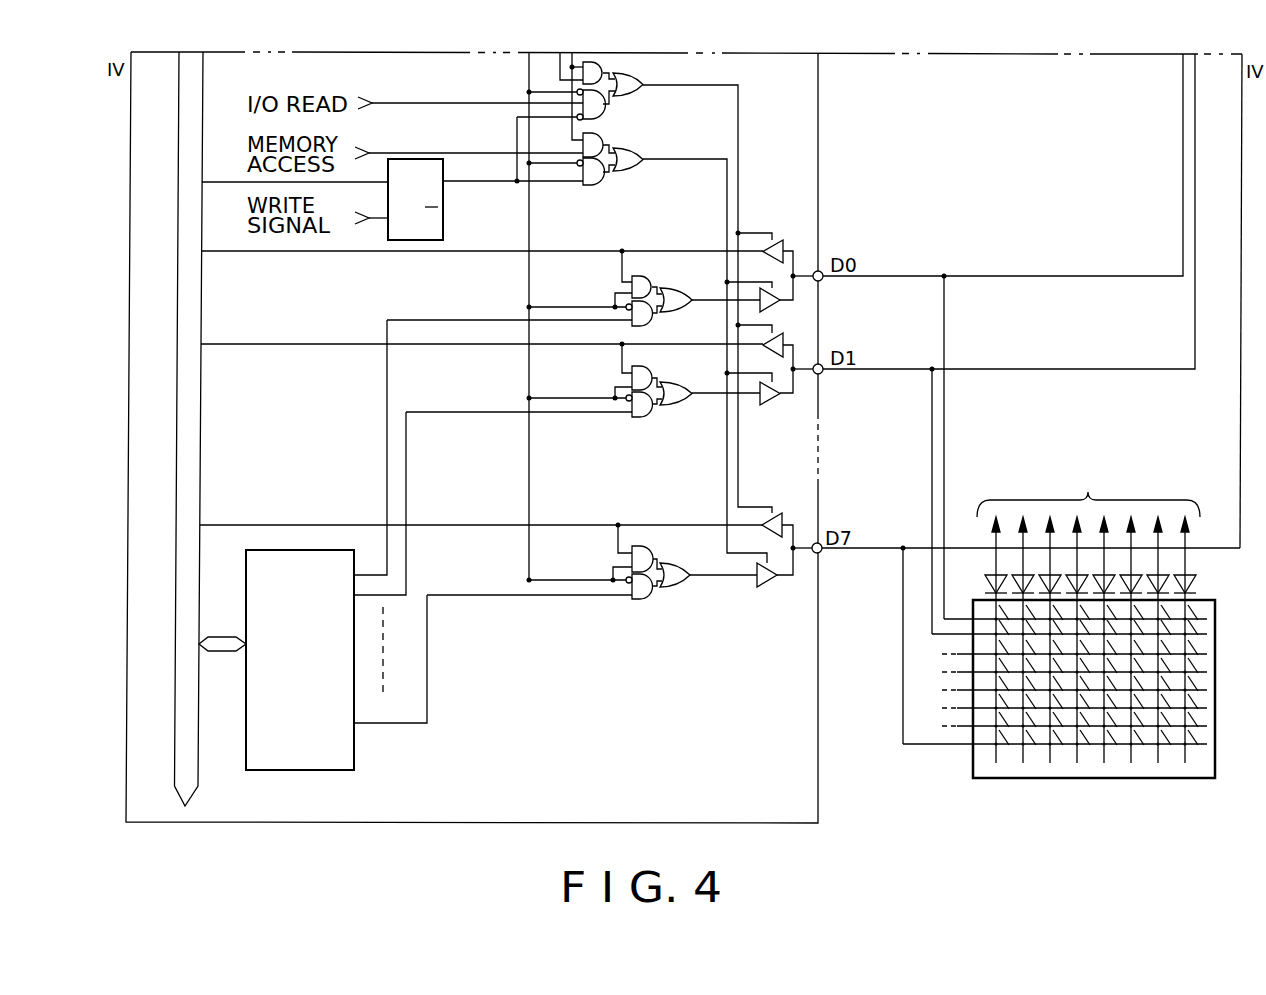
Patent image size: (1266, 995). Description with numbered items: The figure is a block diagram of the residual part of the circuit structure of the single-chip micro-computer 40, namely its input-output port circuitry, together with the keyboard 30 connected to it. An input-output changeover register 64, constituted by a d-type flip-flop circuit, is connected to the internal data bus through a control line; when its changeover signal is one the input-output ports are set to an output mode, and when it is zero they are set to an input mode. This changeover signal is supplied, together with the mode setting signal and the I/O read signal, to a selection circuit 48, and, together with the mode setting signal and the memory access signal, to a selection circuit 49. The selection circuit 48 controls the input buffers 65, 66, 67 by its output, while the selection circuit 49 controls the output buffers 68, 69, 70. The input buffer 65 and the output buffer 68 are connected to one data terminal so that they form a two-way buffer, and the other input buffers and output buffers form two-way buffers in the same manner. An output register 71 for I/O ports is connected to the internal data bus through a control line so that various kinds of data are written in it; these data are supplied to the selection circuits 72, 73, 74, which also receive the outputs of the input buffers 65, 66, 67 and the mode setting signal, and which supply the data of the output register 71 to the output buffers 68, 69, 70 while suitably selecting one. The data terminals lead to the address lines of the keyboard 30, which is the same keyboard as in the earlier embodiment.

The keyboard 30 is at (1092, 780).
The single-chip micro-computer 40 is at (818, 790).
The selection circuit 48 is at (618, 100).
The selection circuit 49 is at (623, 175).
The input-output changeover register 64 is at (443, 226).
The input buffer 65 is at (783, 243).
The input buffer 66 is at (780, 357).
The input buffer 67 is at (782, 515).
The output buffer 68 is at (772, 312).
The output buffer 69 is at (772, 405).
The output buffer 70 is at (770, 587).
The output register for I/O ports 71 is at (354, 763).
The selection circuit 72 is at (667, 281).
The selection circuit 73 is at (660, 371).
The selection circuit 74 is at (658, 555).